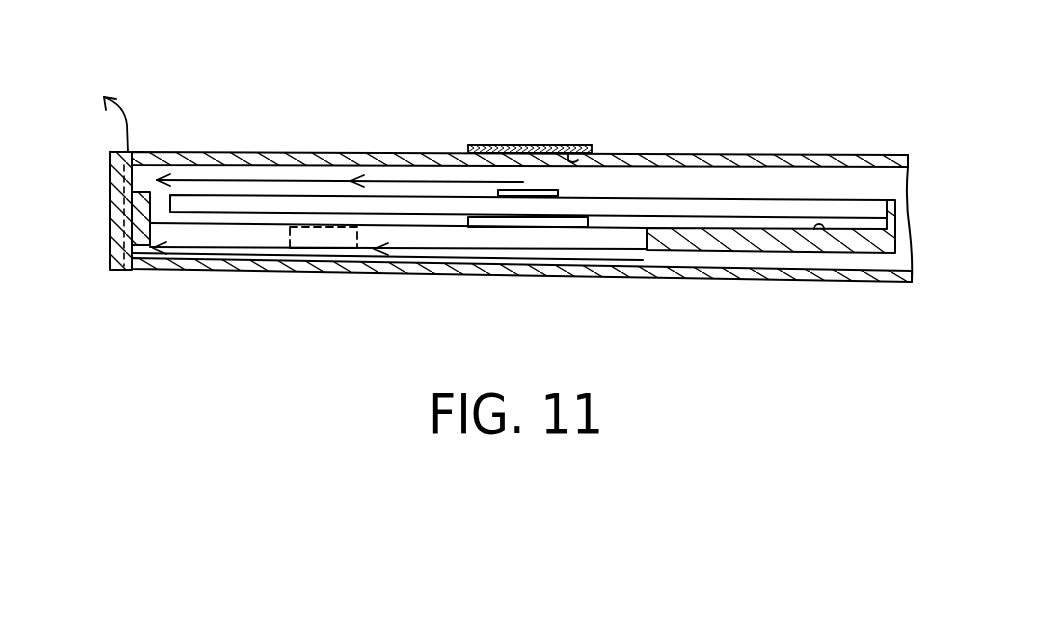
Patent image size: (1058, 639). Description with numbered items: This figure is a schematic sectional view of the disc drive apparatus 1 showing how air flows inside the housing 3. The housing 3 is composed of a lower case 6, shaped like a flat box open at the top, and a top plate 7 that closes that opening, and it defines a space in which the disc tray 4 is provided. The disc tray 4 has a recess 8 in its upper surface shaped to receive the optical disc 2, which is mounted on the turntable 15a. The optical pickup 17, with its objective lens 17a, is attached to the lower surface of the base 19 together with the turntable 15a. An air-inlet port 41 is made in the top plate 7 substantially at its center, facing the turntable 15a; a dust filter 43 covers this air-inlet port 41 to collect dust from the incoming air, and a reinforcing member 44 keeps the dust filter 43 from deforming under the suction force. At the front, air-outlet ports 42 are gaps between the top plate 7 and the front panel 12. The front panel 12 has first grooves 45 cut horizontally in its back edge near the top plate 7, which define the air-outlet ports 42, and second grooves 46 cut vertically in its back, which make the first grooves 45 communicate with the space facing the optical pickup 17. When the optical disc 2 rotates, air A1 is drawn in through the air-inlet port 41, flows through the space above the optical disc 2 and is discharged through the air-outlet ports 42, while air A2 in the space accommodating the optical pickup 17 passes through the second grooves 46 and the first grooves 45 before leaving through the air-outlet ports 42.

The disc drive apparatus 1 is at (185, 38).
The optical disc 2 is at (770, 200).
The housing 3 is at (882, 112).
The disc tray 4 is at (793, 243).
The lower case 6 is at (887, 282).
The top plate 7 is at (888, 155).
The recess 8 is at (825, 232).
The front panel 12 is at (108, 212).
The turntable 15a is at (590, 219).
The optical pickup 17 is at (357, 237).
The objective lens 17a is at (323, 227).
The base 19 is at (505, 237).
The air-inlet port 41 is at (562, 155).
The air-outlet ports 42 is at (138, 142).
The dust filter 43 is at (468, 150).
The reinforcing member 44 is at (467, 152).
The first grooves 45 is at (108, 157).
The second grooves 46 is at (105, 190).
The air A1 is at (507, 182).
The air A2 is at (237, 253).